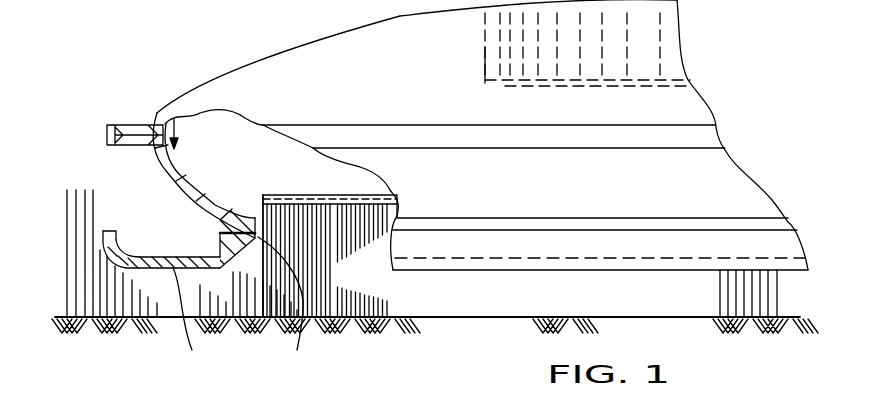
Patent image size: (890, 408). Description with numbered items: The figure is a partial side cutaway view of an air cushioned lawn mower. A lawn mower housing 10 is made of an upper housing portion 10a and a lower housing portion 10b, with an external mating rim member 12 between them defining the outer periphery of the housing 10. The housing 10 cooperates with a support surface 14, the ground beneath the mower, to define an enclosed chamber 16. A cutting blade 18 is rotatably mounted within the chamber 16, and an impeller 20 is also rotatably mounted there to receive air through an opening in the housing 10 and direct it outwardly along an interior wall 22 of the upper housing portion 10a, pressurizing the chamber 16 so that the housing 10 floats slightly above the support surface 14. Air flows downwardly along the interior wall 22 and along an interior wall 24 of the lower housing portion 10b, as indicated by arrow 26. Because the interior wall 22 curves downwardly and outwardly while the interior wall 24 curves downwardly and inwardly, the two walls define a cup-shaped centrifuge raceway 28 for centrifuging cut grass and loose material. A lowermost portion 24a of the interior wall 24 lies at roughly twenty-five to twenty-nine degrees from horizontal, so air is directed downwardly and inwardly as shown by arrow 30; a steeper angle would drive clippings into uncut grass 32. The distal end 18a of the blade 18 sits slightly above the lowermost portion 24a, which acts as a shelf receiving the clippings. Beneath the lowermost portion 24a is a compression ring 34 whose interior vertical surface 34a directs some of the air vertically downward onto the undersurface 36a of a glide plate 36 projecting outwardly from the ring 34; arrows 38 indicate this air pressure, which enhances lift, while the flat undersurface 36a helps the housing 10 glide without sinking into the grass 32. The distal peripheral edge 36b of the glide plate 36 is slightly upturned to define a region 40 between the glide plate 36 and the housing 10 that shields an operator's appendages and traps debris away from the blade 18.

The lawn mower housing 10 is at (272, 0).
The upper housing portion 10a is at (166, 98).
The lower housing portion 10b is at (158, 172).
The external mating rim member 12 is at (106, 128).
The support surface 14 is at (492, 316).
The enclosed chamber 16 is at (310, 93).
The cutting blade 18 is at (318, 200).
The distal end of blade 18a is at (320, 199).
The impeller 20 is at (486, 50).
The interior wall of upper housing portion 22 is at (209, 70).
The interior wall of lower housing portion 24 is at (191, 194).
The lowermost portion of interior wall 24a is at (258, 217).
The arrow 26 is at (183, 129).
The centrifuge raceway 28 is at (190, 158).
The arrow 30 is at (338, 257).
The uncut grass 32 is at (385, 212).
The compression ring 34 is at (220, 242).
The interior vertical surface 34a is at (297, 350).
The glide plate 36 is at (143, 258).
The undersurface of glide plate 36a is at (174, 322).
The distal peripheral edge of glide plate 36b is at (103, 239).
The arrows 38 is at (253, 262).
The region 40 is at (131, 201).